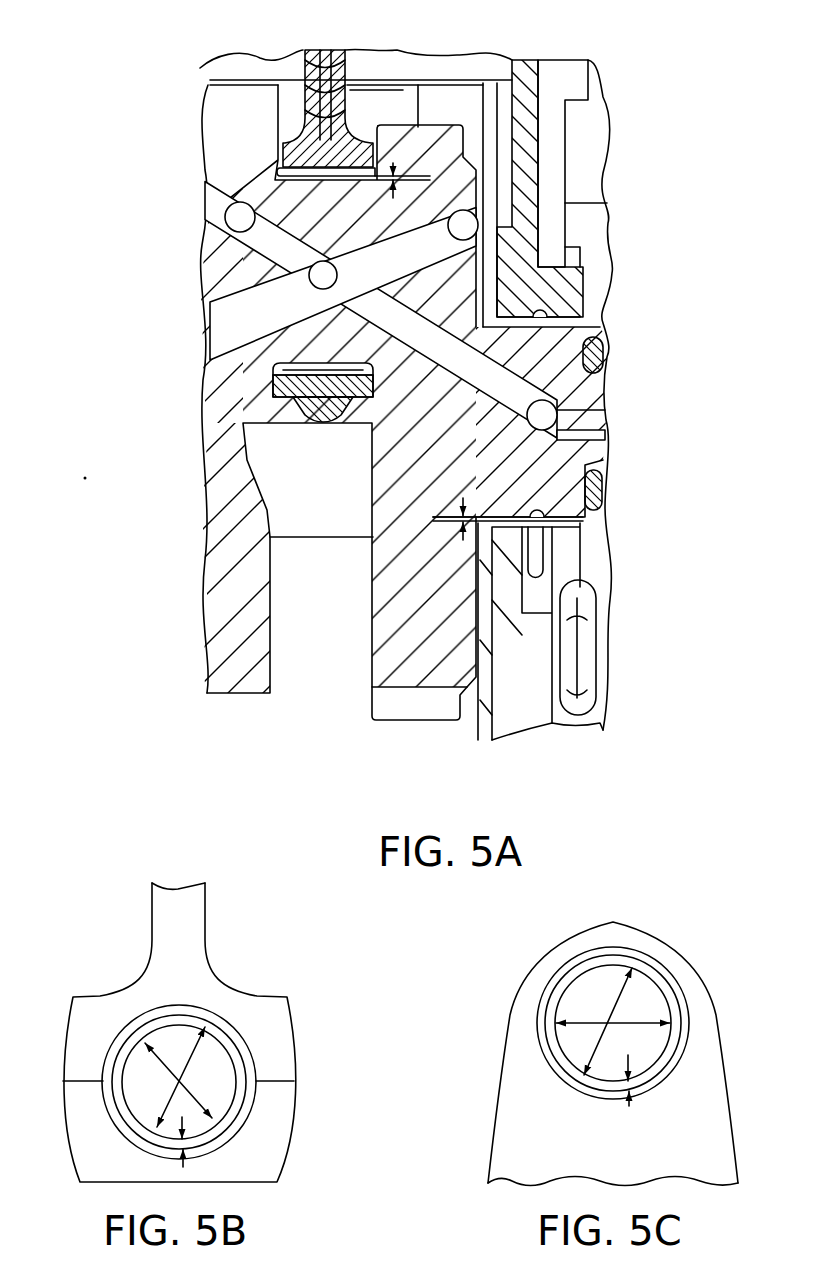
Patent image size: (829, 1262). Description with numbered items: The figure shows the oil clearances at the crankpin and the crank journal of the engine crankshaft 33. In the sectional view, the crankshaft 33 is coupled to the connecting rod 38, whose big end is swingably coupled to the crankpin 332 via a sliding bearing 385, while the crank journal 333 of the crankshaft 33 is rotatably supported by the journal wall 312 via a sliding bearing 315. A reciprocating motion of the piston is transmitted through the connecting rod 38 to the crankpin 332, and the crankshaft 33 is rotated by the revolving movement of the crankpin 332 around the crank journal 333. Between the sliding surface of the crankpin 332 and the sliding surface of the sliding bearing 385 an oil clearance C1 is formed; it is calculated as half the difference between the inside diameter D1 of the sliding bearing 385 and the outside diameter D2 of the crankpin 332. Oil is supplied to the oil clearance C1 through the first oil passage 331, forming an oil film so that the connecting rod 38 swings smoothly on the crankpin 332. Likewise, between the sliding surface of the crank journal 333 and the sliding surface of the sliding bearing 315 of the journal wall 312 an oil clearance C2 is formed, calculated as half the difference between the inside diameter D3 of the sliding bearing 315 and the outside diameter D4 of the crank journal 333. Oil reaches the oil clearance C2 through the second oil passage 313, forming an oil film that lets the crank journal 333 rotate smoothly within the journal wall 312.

In FIG. 5A, the crankshaft 33 is at (432, 70).
In FIG. 5A, the connecting rod 38 is at (318, 57).
In FIG. 5B, the connecting rod 38 is at (287, 1010).
In FIG. 5A, the sliding bearing 385 is at (358, 112).
In FIG. 5B, the sliding bearing 385 is at (250, 1063).
In FIG. 5A, the first oil passage 331 is at (382, 316).
In FIG. 5A, the crankpin 332 is at (317, 353).
In FIG. 5B, the crankpin 332 is at (205, 1090).
In FIG. 5C, the crank journal 333 is at (608, 1002).
In FIG. 5A, the journal wall 312 is at (570, 560).
In FIG. 5C, the journal wall 312 is at (707, 1093).
In FIG. 5A, the second oil passage 313 is at (538, 698).
In FIG. 5A, the sliding bearing 315 is at (572, 597).
In FIG. 5C, the sliding bearing 315 is at (682, 1043).
In FIG. 5A, the oil clearance C1 is at (404, 171).
In FIG. 5B, the oil clearance C1 is at (199, 1147).
In FIG. 5A, the oil clearance C2 is at (508, 510).
In FIG. 5C, the oil clearance C2 is at (644, 1086).
In FIG. 5B, the inside diameter of the sliding bearing D1 is at (187, 1070).
In FIG. 5B, the outside diameter of the crankpin D2 is at (133, 1070).
In FIG. 5C, the inside diameter of the sliding bearing D3 is at (630, 1020).
In FIG. 5C, the outside diameter of the crank journal D4 is at (630, 1020).